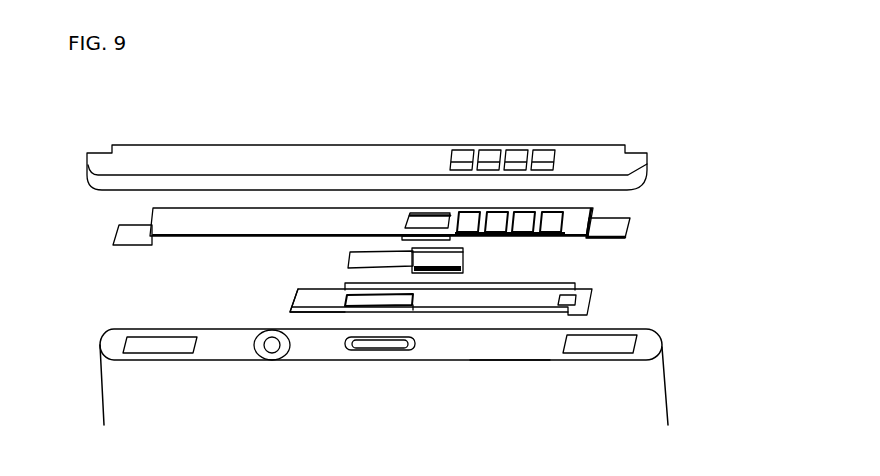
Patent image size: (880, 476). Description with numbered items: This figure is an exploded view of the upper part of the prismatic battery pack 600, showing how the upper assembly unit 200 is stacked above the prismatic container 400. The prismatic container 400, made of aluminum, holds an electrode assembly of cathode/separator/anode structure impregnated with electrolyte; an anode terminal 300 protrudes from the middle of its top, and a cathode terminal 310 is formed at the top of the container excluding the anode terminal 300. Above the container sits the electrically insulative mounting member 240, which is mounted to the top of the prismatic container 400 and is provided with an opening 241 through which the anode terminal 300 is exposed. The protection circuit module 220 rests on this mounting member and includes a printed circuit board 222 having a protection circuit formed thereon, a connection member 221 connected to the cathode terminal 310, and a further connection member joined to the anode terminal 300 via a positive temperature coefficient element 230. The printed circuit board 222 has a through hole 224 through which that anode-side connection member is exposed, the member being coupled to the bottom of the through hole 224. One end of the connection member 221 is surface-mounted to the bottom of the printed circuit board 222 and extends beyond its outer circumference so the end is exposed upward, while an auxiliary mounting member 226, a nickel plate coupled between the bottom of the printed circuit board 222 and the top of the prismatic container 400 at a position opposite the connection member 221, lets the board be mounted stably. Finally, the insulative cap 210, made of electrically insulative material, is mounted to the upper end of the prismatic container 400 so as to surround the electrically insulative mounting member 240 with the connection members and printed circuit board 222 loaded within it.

The prismatic battery pack 600 is at (78, 124).
The upper assembly unit 200 is at (723, 127).
The insulative cap 210 is at (642, 163).
The protection circuit module 220 is at (399, 256).
The connection member 221 is at (615, 230).
The printed circuit board 222 is at (575, 222).
The through hole 224 is at (420, 224).
The auxiliary mounting member 226 is at (133, 233).
The positive temperature coefficient element 230 is at (334, 270).
The electrically insulative mounting member 240 is at (453, 299).
The opening 241 is at (296, 315).
The prismatic container 400 is at (410, 377).
The anode terminal 300 is at (378, 340).
The cathode terminal 310 is at (510, 342).